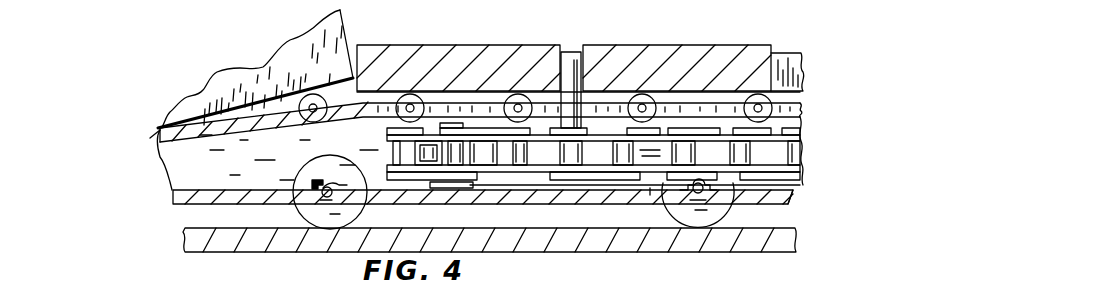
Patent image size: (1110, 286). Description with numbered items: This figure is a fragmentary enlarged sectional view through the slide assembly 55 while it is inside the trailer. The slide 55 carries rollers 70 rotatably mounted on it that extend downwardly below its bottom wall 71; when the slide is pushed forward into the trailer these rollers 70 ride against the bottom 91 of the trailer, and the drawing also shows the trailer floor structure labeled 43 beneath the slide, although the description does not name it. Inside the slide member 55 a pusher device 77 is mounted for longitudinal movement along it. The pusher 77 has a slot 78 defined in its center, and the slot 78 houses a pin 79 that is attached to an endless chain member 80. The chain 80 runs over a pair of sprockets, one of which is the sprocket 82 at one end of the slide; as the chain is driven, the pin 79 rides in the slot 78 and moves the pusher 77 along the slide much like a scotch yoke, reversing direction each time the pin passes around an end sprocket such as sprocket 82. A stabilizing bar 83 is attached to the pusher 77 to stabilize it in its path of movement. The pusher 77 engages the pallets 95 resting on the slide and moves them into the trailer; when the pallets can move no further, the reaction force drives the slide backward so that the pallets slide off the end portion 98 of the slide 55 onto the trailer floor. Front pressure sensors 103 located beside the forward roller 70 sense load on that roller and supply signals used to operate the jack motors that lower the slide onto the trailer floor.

The pallets 95 is at (340, 44).
The pusher device 77 is at (715, 50).
The slot 78 is at (568, 52).
The pin 79 is at (575, 60).
The stabilizing bar 83 is at (789, 62).
The end portion 98 is at (160, 132).
The front pressure sensors 103 is at (313, 178).
The bottom wall 71 is at (176, 197).
The rollers 70 is at (300, 207).
The sprocket 82 is at (498, 157).
The endless chain member 80 is at (798, 153).
The slide assembly 55 is at (789, 200).
The bottom of the trailer 91 is at (650, 195).
The floor 43 is at (489, 257).